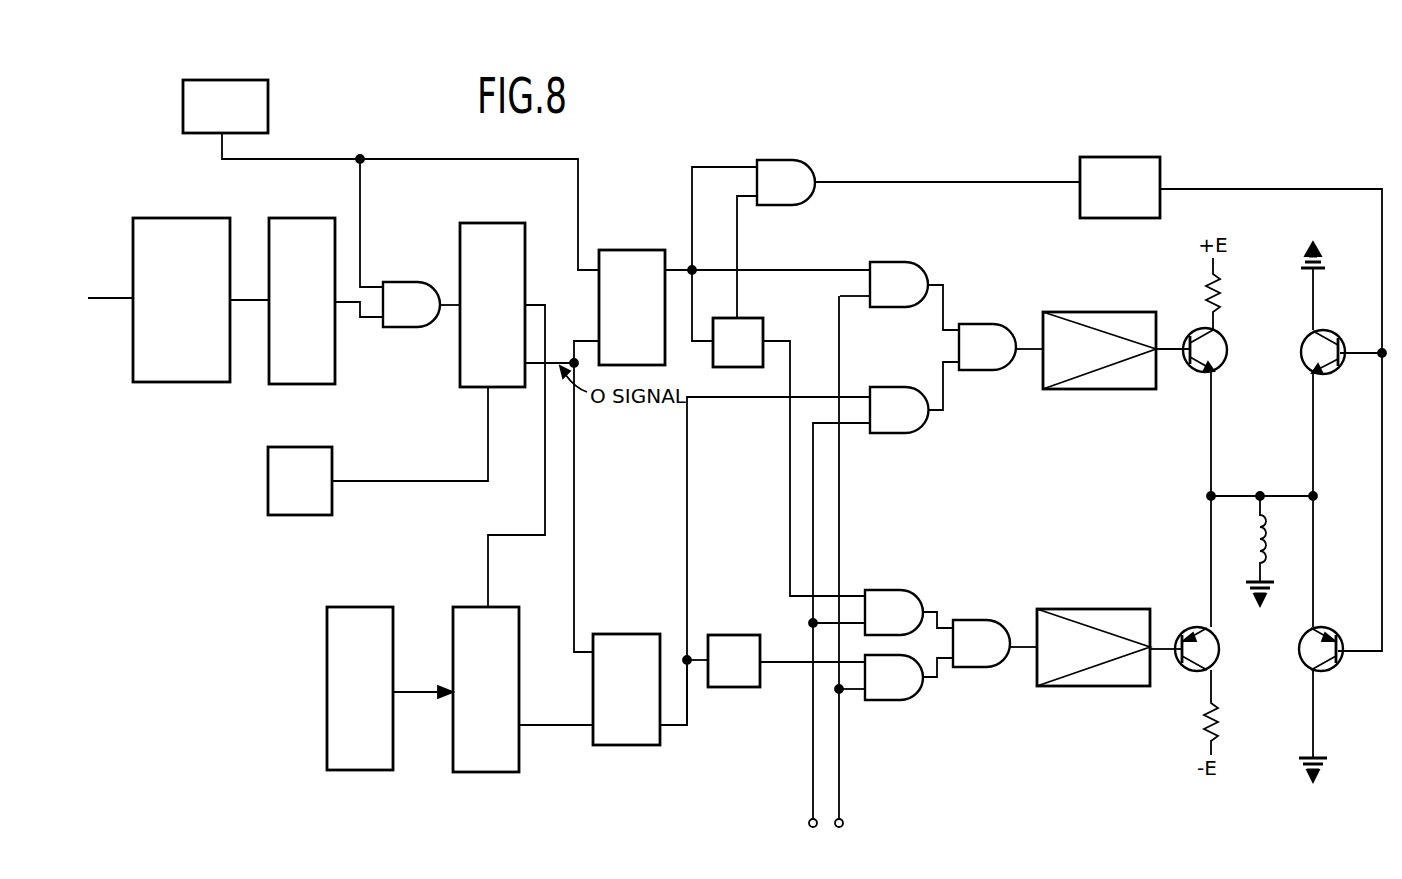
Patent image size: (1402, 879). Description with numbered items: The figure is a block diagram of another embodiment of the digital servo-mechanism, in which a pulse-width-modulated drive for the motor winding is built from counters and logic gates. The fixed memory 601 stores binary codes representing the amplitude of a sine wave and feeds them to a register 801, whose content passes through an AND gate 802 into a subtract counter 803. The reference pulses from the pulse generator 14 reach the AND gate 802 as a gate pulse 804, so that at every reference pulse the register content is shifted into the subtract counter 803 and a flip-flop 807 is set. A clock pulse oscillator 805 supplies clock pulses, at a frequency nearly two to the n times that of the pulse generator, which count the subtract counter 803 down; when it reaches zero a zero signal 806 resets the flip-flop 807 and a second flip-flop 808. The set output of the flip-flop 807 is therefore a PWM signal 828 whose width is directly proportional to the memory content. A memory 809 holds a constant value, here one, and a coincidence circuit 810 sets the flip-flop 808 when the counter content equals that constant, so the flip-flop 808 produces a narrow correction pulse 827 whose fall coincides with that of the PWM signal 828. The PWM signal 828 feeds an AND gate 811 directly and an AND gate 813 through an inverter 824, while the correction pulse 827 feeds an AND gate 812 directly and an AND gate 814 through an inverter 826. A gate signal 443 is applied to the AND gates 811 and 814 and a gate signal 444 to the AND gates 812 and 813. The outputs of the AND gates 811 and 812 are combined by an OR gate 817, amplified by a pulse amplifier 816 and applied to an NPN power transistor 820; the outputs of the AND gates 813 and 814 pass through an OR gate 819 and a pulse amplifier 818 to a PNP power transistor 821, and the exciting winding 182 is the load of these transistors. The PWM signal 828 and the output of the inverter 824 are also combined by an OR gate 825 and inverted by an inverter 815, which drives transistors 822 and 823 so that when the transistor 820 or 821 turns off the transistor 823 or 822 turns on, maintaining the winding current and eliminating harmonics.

The pulse generator 14 is at (240, 80).
The gate pulse 804 is at (335, 159).
The fixed memory 601 is at (163, 218).
The register 801 is at (297, 218).
The AND gate 802 is at (430, 283).
The subtract counter 803 is at (488, 223).
The clock pulse oscillator 805 is at (334, 460).
The zero signal 806 is at (557, 363).
The flip-flop 807 is at (630, 250).
The PWM signal 828 is at (689, 265).
The OR gate 825 is at (800, 160).
The inverter 824 is at (765, 326).
The inverter 815 is at (1160, 158).
The AND gate 811 is at (918, 272).
The AND gate 812 is at (905, 388).
The OR gate 817 is at (985, 325).
The pulse amplifier 816 is at (1112, 312).
The power transistor 820 is at (1227, 345).
The transistor 822 is at (1345, 345).
The coil 182 is at (1255, 545).
The memory 809 is at (363, 607).
The coincidence circuit 810 is at (468, 607).
The flip-flop 808 is at (625, 634).
The inverter 826 is at (748, 635).
The correction pulse 827 is at (687, 728).
The AND gate 813 is at (900, 590).
The AND gate 814 is at (915, 698).
The OR gate 819 is at (980, 621).
The pulse amplifier 818 is at (1110, 609).
The power transistor 821 is at (1212, 665).
The transistor 823 is at (1337, 665).
The gate signal 444 is at (808, 818).
The gate signal 443 is at (842, 818).